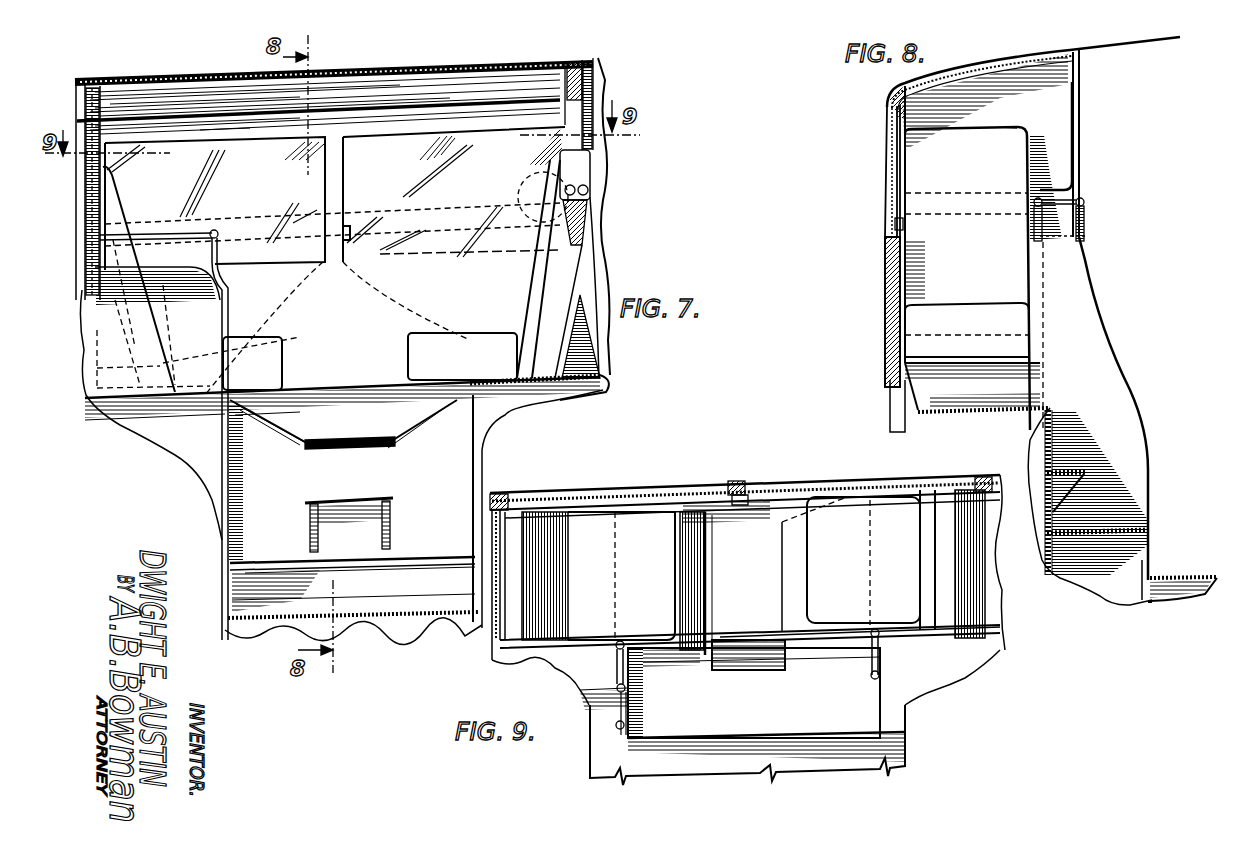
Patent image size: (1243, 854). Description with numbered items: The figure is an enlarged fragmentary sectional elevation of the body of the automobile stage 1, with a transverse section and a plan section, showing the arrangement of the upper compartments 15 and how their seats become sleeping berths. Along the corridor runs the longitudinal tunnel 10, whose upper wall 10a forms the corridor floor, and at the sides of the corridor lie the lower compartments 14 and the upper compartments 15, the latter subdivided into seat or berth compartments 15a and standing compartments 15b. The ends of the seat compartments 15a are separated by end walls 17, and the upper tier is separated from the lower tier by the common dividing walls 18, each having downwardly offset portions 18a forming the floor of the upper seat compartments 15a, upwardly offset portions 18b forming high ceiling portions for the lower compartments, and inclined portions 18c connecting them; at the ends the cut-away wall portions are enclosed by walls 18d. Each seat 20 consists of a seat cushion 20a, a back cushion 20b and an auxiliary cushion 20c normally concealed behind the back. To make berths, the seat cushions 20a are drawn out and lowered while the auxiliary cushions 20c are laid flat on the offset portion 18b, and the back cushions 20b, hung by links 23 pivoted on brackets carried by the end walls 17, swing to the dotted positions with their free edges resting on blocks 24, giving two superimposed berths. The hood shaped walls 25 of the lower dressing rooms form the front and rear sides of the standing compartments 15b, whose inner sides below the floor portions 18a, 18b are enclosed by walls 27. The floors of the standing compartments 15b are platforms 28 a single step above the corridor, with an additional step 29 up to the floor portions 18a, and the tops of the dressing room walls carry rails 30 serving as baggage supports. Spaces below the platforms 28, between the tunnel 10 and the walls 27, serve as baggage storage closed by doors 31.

In FIG. 7, the top rail 1 is at (184, 80).
In FIG. 9, the top rail 1 is at (800, 488).
In FIG. 8, the longitudinal tunnel 10 is at (1186, 598).
In FIG. 9, the upper side or wall of the tunnel 10a is at (883, 757).
In FIG. 8, the upper side or wall of the tunnel 10a is at (1174, 578).
In FIG. 8, the lower compartments 14 is at (1037, 452).
In FIG. 8, the upper compartments 15 is at (992, 168).
In FIG. 9, the seat or berth compartments 15a is at (702, 500).
In FIG. 8, the seat or berth compartments 15a is at (1005, 290).
In FIG. 9, the standing compartments 15b is at (681, 705).
In FIG. 8, the standing compartments 15b is at (1070, 370).
In FIG. 7, the end walls 17 is at (568, 371).
In FIG. 7, the common dividing walls 18 is at (533, 388).
In FIG. 9, the common dividing walls 18 is at (962, 562).
In FIG. 8, the common dividing walls 18 is at (892, 372).
In FIG. 7, the downwardly offset portions 18a is at (388, 445).
In FIG. 9, the downwardly offset portions 18a is at (750, 578).
In FIG. 8, the downwardly offset portions 18a is at (968, 411).
In FIG. 7, the upwardly offset portions 18b is at (586, 392).
In FIG. 9, the inclined portions 18c is at (795, 602).
In FIG. 7, the walls 18d is at (292, 425).
In FIG. 9, the walls 18d is at (775, 508).
In FIG. 8, the walls 18d is at (912, 402).
In FIG. 7, the seats 20 is at (506, 340).
In FIG. 9, the seats 20 is at (575, 517).
In FIG. 7, the seat cushions 20a is at (455, 335).
In FIG. 9, the seat cushions 20a is at (633, 520).
In FIG. 8, the seat cushions 20a is at (895, 330).
In FIG. 7, the back cushions 20b is at (548, 228).
In FIG. 9, the back cushions 20b is at (522, 515).
In FIG. 8, the back cushions 20b is at (890, 258).
In FIG. 7, the auxiliary cushions 20c is at (572, 277).
In FIG. 7, the links 23 is at (572, 172).
In FIG. 7, the blocks 24 is at (357, 232).
In FIG. 9, the blocks 24 is at (738, 494).
In FIG. 7, the hood shaped walls 25 is at (226, 312).
In FIG. 9, the hood shaped walls 25 is at (645, 692).
In FIG. 8, the hood shaped walls 25 is at (1080, 302).
In FIG. 7, the walls 27 is at (255, 494).
In FIG. 9, the platforms 28 is at (768, 713).
In FIG. 8, the platforms 28 is at (1097, 523).
In FIG. 7, the additional step 29 is at (393, 500).
In FIG. 9, the additional step 29 is at (790, 665).
In FIG. 8, the additional step 29 is at (1105, 450).
In FIG. 7, the rails 30 is at (212, 230).
In FIG. 9, the rails 30 is at (628, 654).
In FIG. 8, the rails 30 is at (1062, 200).
In FIG. 9, the doors 31 is at (618, 728).